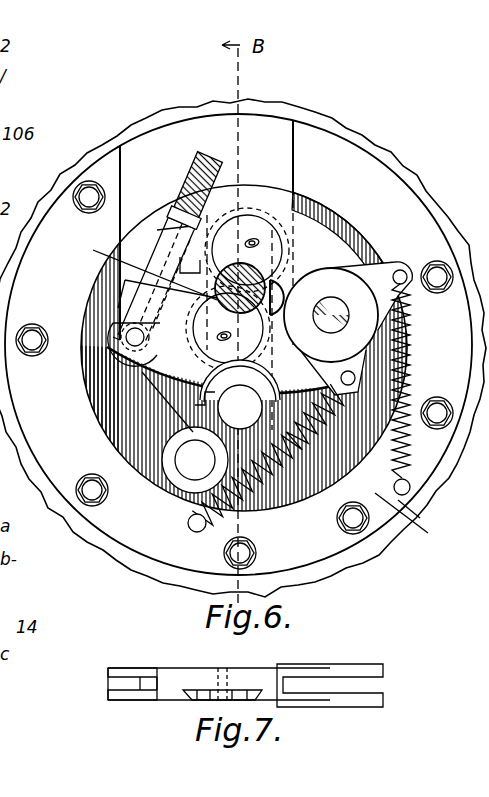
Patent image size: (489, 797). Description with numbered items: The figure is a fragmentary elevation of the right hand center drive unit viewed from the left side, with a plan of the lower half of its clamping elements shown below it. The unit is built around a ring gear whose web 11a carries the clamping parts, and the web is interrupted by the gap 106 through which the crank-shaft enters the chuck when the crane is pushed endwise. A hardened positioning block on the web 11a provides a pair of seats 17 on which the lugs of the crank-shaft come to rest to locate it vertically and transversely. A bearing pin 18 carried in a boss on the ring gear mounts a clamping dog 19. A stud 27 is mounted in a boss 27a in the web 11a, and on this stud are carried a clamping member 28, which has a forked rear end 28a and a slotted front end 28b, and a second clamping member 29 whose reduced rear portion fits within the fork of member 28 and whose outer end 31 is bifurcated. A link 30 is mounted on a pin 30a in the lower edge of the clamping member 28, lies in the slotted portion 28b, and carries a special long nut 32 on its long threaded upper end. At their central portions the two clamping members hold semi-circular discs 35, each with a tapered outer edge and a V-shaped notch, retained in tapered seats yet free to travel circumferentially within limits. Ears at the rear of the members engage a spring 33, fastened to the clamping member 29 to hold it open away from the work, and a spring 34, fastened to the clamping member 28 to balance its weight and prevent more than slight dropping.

In FIG. 6, the gap 106 is at (255, 140).
In FIG. 6, the special long nut 32 is at (206, 176).
In FIG. 6, the bifurcated outer end 31 is at (152, 224).
In FIG. 6, the link 30 is at (141, 270).
In FIG. 6, the pin 30a is at (128, 356).
In FIG. 6, the clamping member 28 is at (113, 323).
In FIG. 7, the clamping member 28 is at (206, 682).
In FIG. 6, the slotted front end 28b is at (150, 340).
In FIG. 7, the slotted front end 28b is at (133, 683).
In FIG. 7, the forked rear end 28a is at (348, 690).
In FIG. 6, the second clamping member 29 is at (306, 236).
In FIG. 6, the stud 27 is at (336, 311).
In FIG. 6, the boss 27a is at (330, 276).
In FIG. 6, the spring 33 is at (410, 412).
In FIG. 6, the spring 34 is at (230, 512).
In FIG. 6, the semi-circular discs 35 is at (256, 246).
In FIG. 6, the seats 17 is at (237, 394).
In FIG. 6, the bearing pin 18 is at (188, 470).
In FIG. 6, the clamping dog 19 is at (168, 404).
In FIG. 6, the ring gear web 11a is at (414, 521).